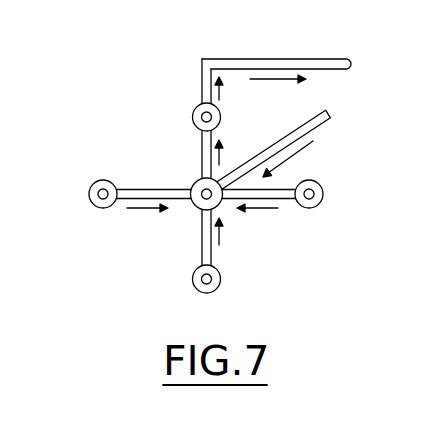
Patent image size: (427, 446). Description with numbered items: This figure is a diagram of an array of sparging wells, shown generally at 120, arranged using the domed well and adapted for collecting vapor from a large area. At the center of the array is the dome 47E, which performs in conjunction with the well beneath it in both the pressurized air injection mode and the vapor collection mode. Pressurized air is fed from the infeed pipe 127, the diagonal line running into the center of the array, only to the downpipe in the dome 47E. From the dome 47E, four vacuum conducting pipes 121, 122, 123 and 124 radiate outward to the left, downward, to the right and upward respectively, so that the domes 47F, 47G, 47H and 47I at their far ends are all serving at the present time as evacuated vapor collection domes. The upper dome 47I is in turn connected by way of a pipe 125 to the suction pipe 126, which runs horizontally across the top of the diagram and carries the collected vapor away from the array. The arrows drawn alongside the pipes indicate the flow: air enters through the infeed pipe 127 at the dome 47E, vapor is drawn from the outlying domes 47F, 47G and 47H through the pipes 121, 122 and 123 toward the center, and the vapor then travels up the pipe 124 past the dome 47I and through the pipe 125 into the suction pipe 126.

The manifold assembly 120 is at (383, 282).
The vacuum conducting pipe 121 is at (144, 189).
The vacuum conducting pipe 122 is at (202, 252).
The vacuum conducting pipe 123 is at (284, 199).
The vacuum conducting pipe 124 is at (220, 130).
The pipe 125 is at (202, 87).
The suction pipe 126 is at (236, 59).
The infeed pipe 127 is at (333, 119).
The dome 47E is at (222, 210).
The dome 47F is at (89, 195).
The dome 47G is at (221, 284).
The dome 47H is at (313, 180).
The dome 47I is at (192, 115).